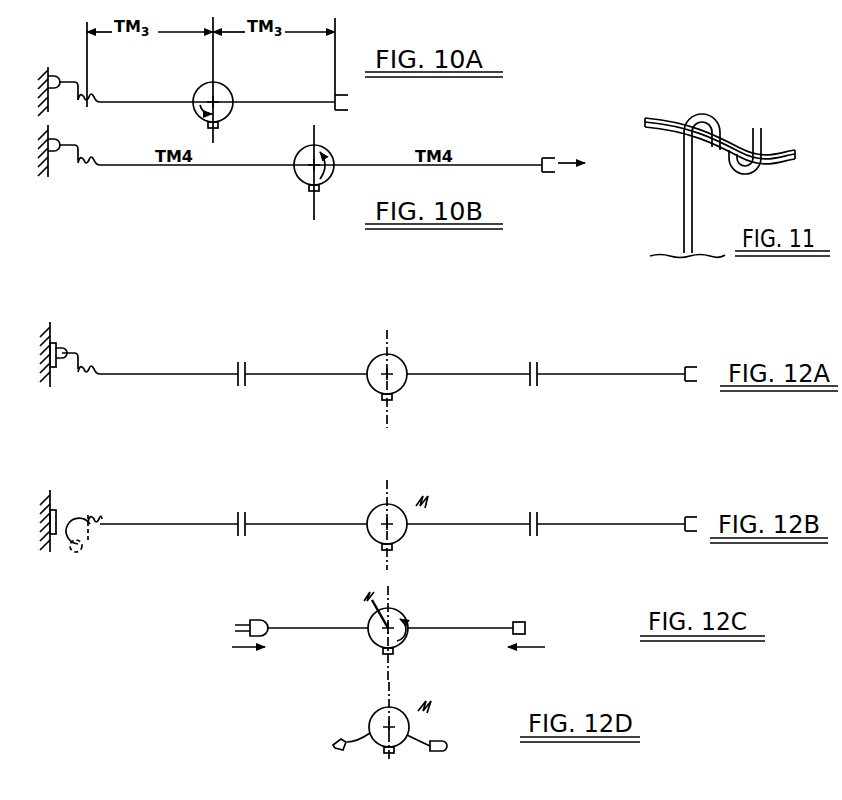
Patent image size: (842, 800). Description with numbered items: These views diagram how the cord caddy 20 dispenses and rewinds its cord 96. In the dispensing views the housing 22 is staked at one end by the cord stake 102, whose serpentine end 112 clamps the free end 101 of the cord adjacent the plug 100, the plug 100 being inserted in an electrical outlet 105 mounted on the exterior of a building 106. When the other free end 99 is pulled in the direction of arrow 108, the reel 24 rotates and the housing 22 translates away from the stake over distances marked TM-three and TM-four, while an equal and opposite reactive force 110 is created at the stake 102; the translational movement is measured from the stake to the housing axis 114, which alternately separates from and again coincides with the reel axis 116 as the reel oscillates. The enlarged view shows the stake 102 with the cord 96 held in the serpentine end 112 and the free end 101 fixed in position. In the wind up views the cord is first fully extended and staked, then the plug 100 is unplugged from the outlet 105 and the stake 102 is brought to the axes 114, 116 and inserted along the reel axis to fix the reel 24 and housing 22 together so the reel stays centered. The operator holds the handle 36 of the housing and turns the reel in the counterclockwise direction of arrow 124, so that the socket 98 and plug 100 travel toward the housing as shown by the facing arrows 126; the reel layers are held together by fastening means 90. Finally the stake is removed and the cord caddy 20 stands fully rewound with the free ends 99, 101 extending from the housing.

In FIG. 10A, the cord caddy 20 is at (212, 80).
In FIG. 10B, the cord caddy 20 is at (338, 150).
In FIG. 12C, the cord caddy 20 is at (388, 633).
In FIG. 12D, the cord caddy 20 is at (372, 705).
In FIG. 12D, the housing 22 is at (405, 740).
In FIG. 12D, the reel 24 is at (377, 712).
In FIG. 10A, the handle 36 is at (216, 128).
In FIG. 10B, the handle 36 is at (319, 191).
In FIG. 12D, the handle 36 is at (389, 752).
In FIG. 12D, the fastening means 90 is at (442, 745).
In FIG. 10A, the cord 96 is at (262, 108).
In FIG. 11, the cord 96 is at (796, 159).
In FIG. 12C, the socket 98 is at (526, 627).
In FIG. 10A, the free end 99 is at (300, 101).
In FIG. 12C, the free end 99 is at (493, 626).
In FIG. 12D, the free end 99 is at (413, 733).
In FIG. 12A, the plug 100 is at (65, 351).
In FIG. 12C, the plug 100 is at (256, 620).
In FIG. 12D, the plug 100 is at (333, 741).
In FIG. 10A, the free end 101 is at (158, 102).
In FIG. 11, the free end 101 is at (666, 125).
In FIG. 12A, the free end 101 is at (166, 373).
In FIG. 12C, the free end 101 is at (304, 627).
In FIG. 12D, the free end 101 is at (369, 723).
In FIG. 10A, the cord stake 102 is at (89, 98).
In FIG. 11, the cord stake 102 is at (696, 193).
In FIG. 12A, the cord stake 102 is at (86, 378).
In FIG. 12B, the cord stake 102 is at (422, 494).
In FIG. 12C, the cord stake 102 is at (364, 596).
In FIG. 12D, the cord stake 102 is at (423, 700).
In FIG. 12A, the electrical outlet 105 is at (58, 344).
In FIG. 12B, the electrical outlet 105 is at (58, 515).
In FIG. 12A, the building 106 is at (50, 380).
In FIG. 12B, the building 106 is at (50, 550).
In FIG. 10B, the arrow 108 is at (577, 159).
In FIG. 10B, the reactive force 110 is at (118, 183).
In FIG. 11, the serpentine end 112 is at (764, 136).
In FIG. 10A, the housing axis 114 is at (196, 65).
In FIG. 10A, the reel axis 116 is at (212, 96).
In FIG. 12C, the counterclockwise arrow 124 is at (406, 620).
In FIG. 12C, the arrows 126 is at (236, 650).